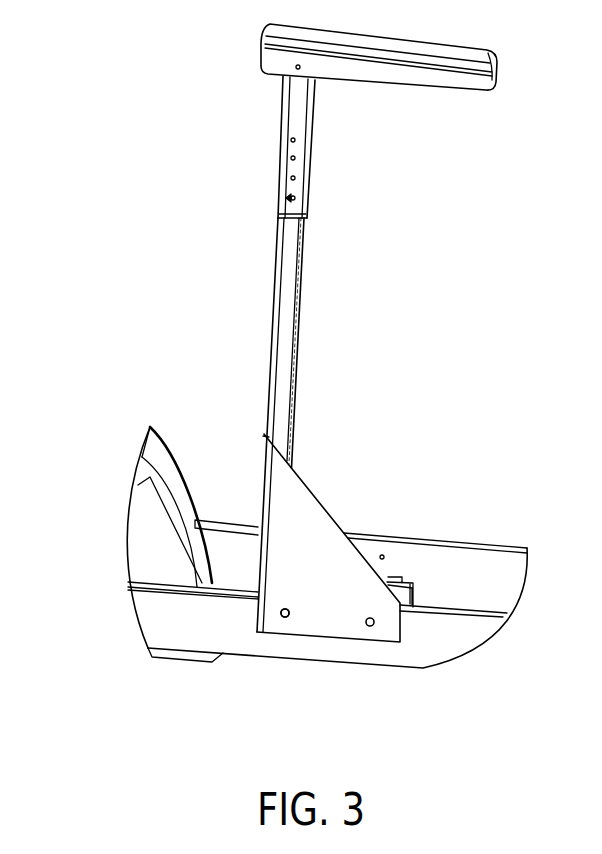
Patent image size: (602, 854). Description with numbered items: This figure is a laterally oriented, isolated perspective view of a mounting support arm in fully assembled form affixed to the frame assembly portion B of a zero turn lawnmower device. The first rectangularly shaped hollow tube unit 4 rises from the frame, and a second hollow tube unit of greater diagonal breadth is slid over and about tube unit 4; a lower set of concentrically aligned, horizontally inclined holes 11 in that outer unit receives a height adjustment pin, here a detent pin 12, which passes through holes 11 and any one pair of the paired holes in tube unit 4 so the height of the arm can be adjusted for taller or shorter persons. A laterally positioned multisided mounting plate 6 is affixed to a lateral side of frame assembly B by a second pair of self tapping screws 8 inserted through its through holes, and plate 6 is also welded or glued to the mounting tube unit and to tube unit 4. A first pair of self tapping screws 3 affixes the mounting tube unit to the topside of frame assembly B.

The lower set of concentrically aligned, horizontally inclined holes 11 is at (278, 130).
The detent pin 12 is at (266, 203).
The first rectangularly shaped hollow tube unit 4 is at (303, 367).
The multisided mounting plate 6 is at (326, 539).
The first pair of self tapping screws 3 is at (410, 566).
The second pair of self tapping screws 8 is at (261, 616).
The frame assembly portion B is at (459, 652).